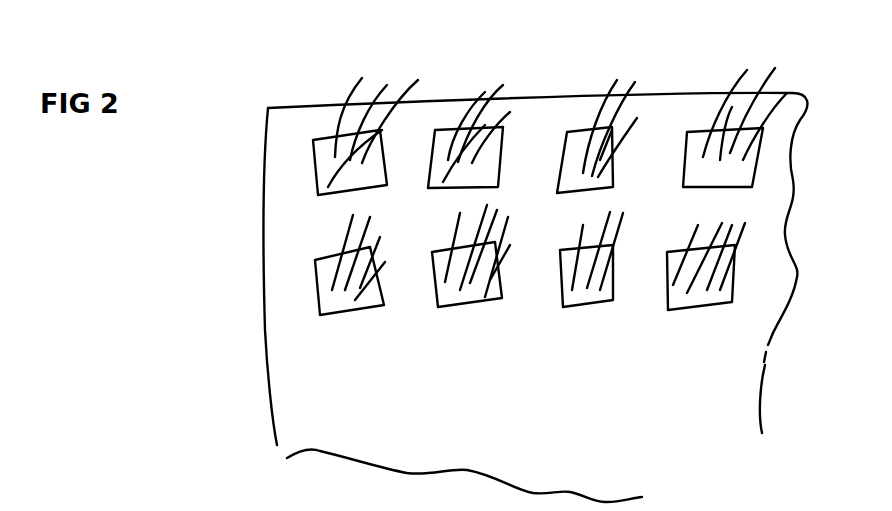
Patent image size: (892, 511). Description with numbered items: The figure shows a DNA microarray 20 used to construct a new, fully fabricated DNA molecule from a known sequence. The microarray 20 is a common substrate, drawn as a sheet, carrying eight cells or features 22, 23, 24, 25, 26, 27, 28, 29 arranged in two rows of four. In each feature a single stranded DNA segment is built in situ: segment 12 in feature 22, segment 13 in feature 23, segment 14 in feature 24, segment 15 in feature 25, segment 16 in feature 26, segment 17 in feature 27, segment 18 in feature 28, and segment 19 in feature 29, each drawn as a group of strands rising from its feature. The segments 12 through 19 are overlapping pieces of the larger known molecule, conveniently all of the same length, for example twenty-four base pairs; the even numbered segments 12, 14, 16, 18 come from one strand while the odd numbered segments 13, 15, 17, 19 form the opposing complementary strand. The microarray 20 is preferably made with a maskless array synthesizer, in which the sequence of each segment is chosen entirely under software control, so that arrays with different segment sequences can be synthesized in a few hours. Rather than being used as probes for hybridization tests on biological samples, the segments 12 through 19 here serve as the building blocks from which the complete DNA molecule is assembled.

The DNA microarray 20 is at (293, 100).
The single stranded DNA segment 12 is at (350, 86).
The single stranded DNA segment 13 is at (472, 90).
The single stranded DNA segment 14 is at (596, 84).
The single stranded DNA segment 15 is at (717, 80).
The single stranded DNA segment 16 is at (382, 247).
The single stranded DNA segment 17 is at (497, 247).
The single stranded DNA segment 18 is at (620, 230).
The single stranded DNA segment 19 is at (742, 238).
The feature 22 is at (327, 197).
The feature 23 is at (433, 190).
The feature 24 is at (565, 160).
The feature 25 is at (682, 170).
The feature 26 is at (348, 317).
The feature 27 is at (453, 313).
The feature 28 is at (558, 307).
The feature 29 is at (662, 312).